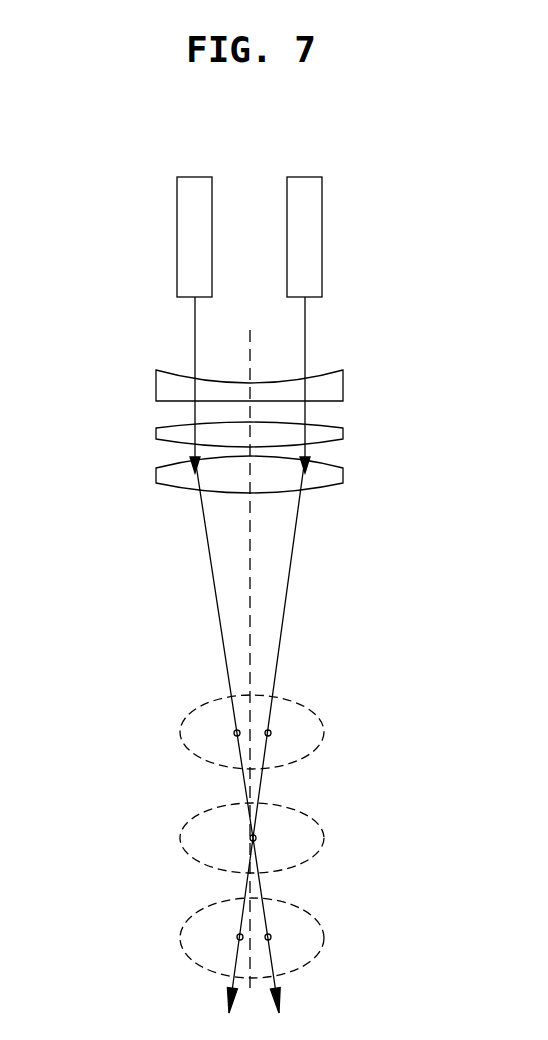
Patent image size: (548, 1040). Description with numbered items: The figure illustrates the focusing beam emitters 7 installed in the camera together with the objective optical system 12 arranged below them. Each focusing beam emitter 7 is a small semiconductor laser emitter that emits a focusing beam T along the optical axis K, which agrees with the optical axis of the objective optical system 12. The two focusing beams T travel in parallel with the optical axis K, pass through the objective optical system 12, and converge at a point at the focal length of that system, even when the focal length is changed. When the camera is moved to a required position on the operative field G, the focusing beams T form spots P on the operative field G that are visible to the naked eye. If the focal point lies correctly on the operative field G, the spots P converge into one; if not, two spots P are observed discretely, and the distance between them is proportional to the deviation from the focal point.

The focusing beam emitter 7 is at (177, 247).
The objective optical system 12 is at (133, 377).
The optical axis K is at (251, 643).
The focusing beam T is at (214, 588).
The operative field G is at (180, 733).
The spot P is at (234, 733).